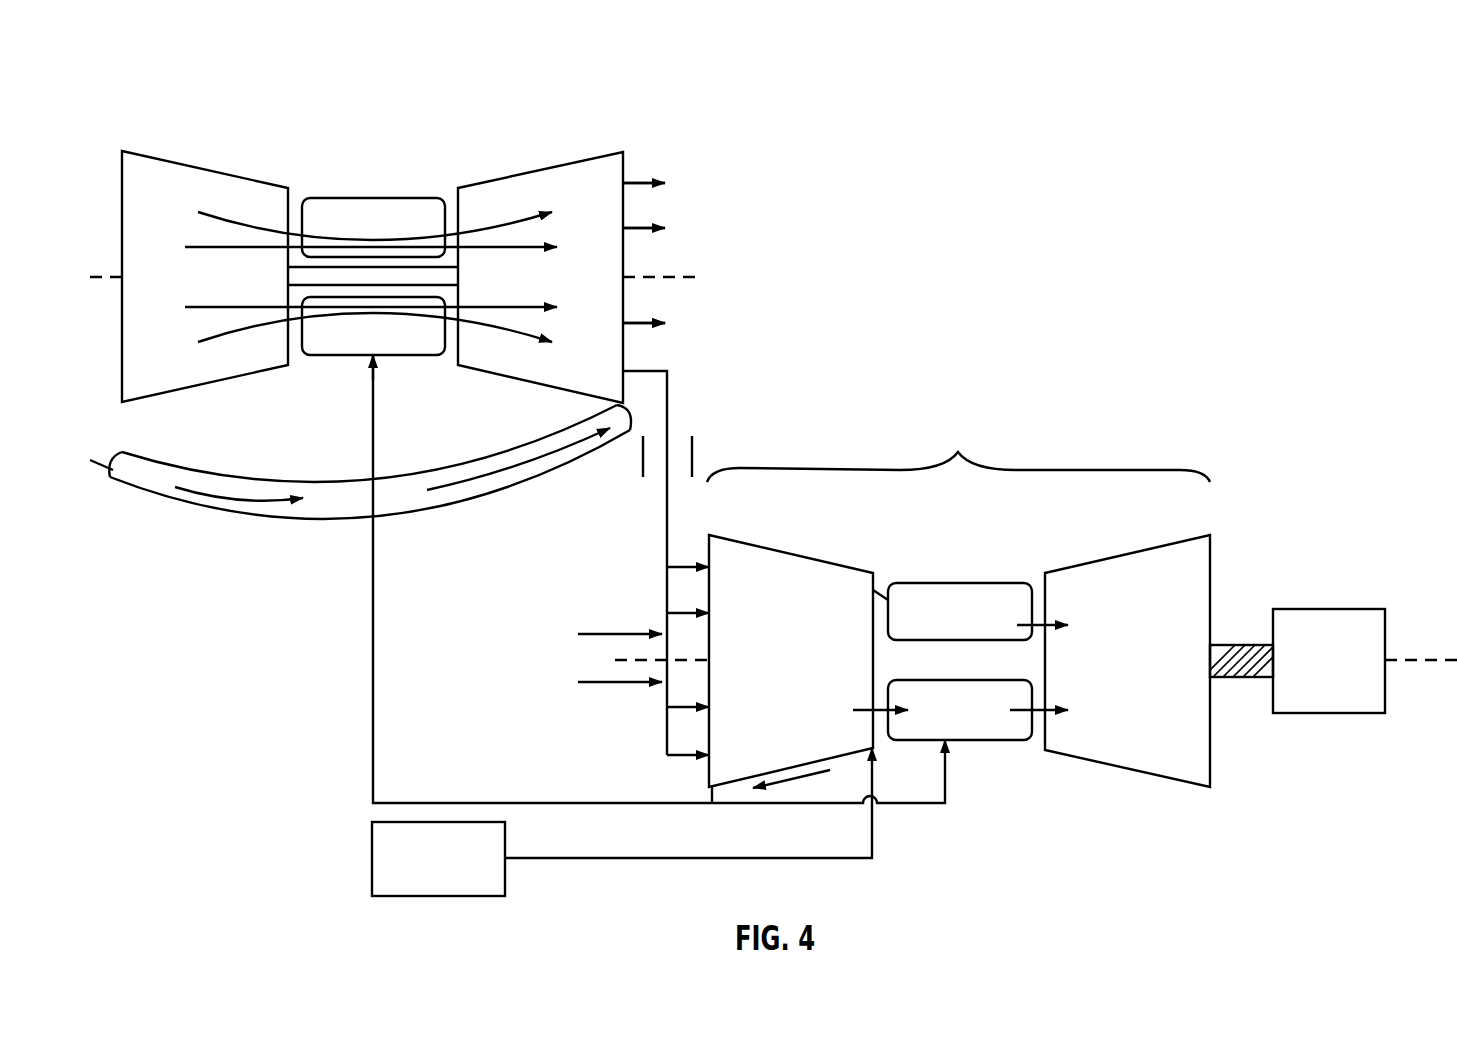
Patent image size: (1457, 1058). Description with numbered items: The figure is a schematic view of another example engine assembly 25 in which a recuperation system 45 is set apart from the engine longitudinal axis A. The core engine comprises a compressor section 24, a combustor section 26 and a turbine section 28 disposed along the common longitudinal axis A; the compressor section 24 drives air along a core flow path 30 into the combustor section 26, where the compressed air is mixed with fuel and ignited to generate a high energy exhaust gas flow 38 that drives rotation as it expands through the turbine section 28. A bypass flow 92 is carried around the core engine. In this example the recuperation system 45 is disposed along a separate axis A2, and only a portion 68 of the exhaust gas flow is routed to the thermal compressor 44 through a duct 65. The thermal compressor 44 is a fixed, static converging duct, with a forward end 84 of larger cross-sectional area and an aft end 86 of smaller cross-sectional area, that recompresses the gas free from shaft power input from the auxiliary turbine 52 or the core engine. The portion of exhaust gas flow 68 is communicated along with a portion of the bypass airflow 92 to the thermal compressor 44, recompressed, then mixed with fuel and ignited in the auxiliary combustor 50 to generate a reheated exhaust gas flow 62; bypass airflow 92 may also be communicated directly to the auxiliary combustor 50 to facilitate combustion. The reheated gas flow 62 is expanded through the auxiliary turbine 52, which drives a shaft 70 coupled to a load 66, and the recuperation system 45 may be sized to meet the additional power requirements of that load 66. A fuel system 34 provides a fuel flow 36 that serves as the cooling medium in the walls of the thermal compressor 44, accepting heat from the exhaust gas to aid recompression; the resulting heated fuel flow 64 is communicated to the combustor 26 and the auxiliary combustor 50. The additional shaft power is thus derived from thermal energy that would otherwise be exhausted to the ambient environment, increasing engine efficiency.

The engine assembly 25 is at (163, 86).
The compressor section 24 is at (207, 387).
The combustor section 26 is at (376, 198).
The turbine section 28 is at (540, 168).
The core flow path 30 is at (219, 213).
The exhaust gas flow 38 is at (643, 168).
The bypass flow 92 is at (174, 488).
The longitudinal axis A is at (680, 277).
The portion of the exhaust gas flow 68 is at (675, 405).
The duct 65 is at (692, 457).
The recuperation system 45 is at (911, 610).
The forward end 84 is at (709, 552).
The thermal compressor 44 is at (785, 565).
The aft end 86 is at (883, 590).
The auxiliary combustor 50 is at (980, 583).
The auxiliary turbine 52 is at (1117, 555).
The shaft 70 is at (1238, 645).
The load 66 is at (1340, 609).
The separate axis A2 is at (1425, 660).
The reheated exhaust gas flow 62 is at (1042, 716).
The heated fuel flow 64 is at (548, 803).
The fuel flow 36 is at (688, 860).
The fuel system 34 is at (455, 897).